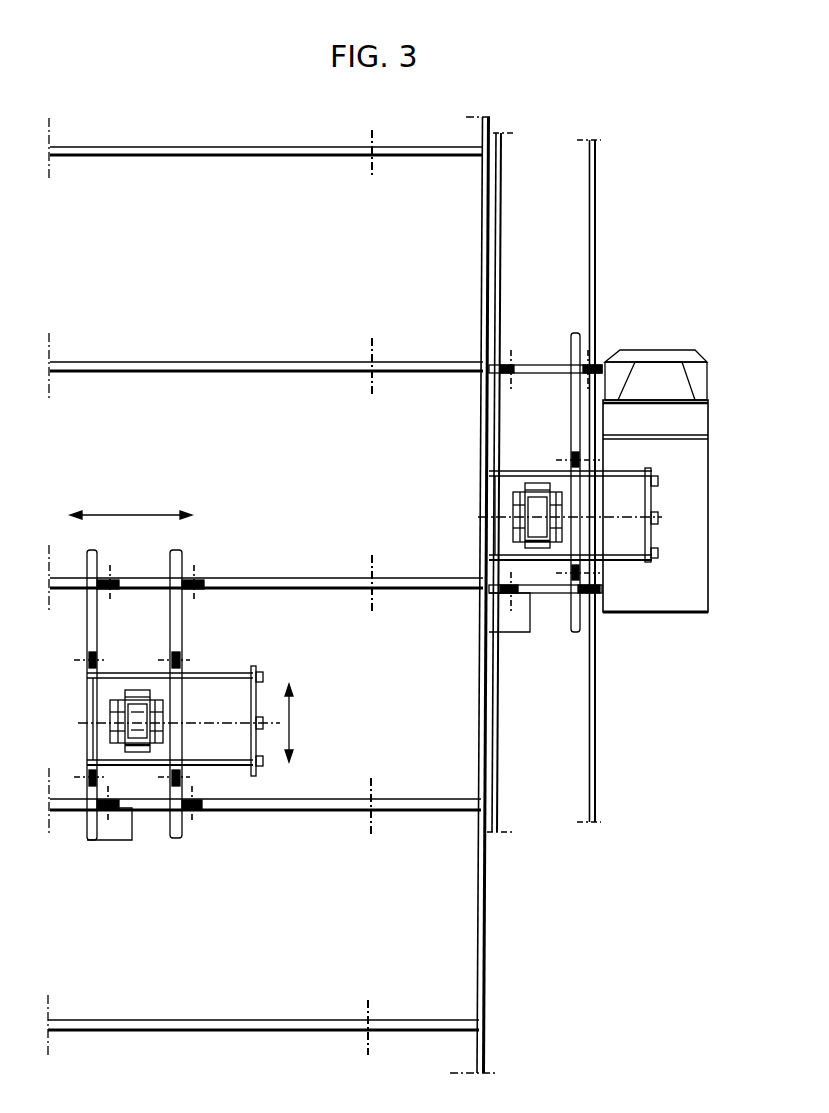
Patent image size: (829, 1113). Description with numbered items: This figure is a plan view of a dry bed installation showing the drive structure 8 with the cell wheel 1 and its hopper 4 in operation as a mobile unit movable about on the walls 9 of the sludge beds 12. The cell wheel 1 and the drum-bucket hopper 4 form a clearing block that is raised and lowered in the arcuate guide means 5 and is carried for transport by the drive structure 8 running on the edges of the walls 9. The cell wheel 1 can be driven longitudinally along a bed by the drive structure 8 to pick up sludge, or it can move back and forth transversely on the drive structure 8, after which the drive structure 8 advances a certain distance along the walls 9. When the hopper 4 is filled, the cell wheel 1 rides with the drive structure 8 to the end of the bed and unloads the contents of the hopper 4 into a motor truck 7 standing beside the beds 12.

The cell wheel 1 is at (130, 738).
The hopper 4 is at (118, 712).
The guide means 5 is at (218, 766).
The truck 7 is at (678, 582).
The drive structure 8 is at (88, 628).
The walls 9 is at (400, 147).
The sludge beds 12 is at (183, 230).